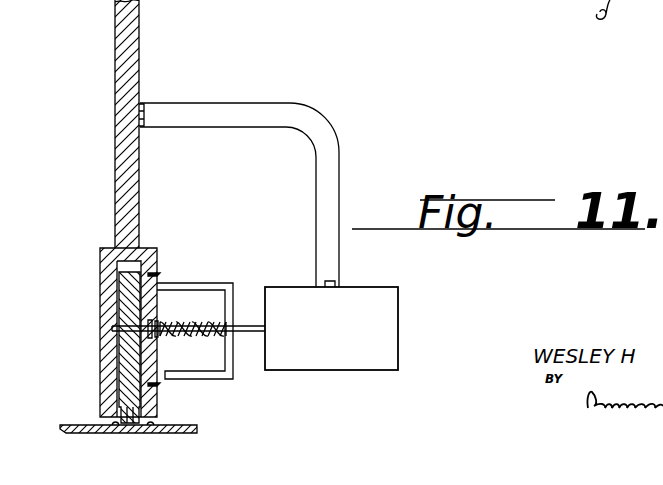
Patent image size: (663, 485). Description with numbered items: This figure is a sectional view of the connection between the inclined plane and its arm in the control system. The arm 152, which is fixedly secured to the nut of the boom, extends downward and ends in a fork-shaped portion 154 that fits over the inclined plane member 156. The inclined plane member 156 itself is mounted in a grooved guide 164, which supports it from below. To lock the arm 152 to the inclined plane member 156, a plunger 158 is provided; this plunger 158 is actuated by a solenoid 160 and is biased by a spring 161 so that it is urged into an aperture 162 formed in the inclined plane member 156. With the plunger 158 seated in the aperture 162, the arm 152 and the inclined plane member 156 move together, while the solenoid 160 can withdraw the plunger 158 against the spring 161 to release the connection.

The arm 152 is at (118, 203).
The fork-shaped portion 154 is at (100, 270).
The inclined plane member 156 is at (155, 394).
The plunger 158 is at (112, 327).
The solenoid 160 is at (326, 360).
The spring 161 is at (176, 323).
The aperture 162 is at (105, 360).
The grooved guide 164 is at (128, 422).